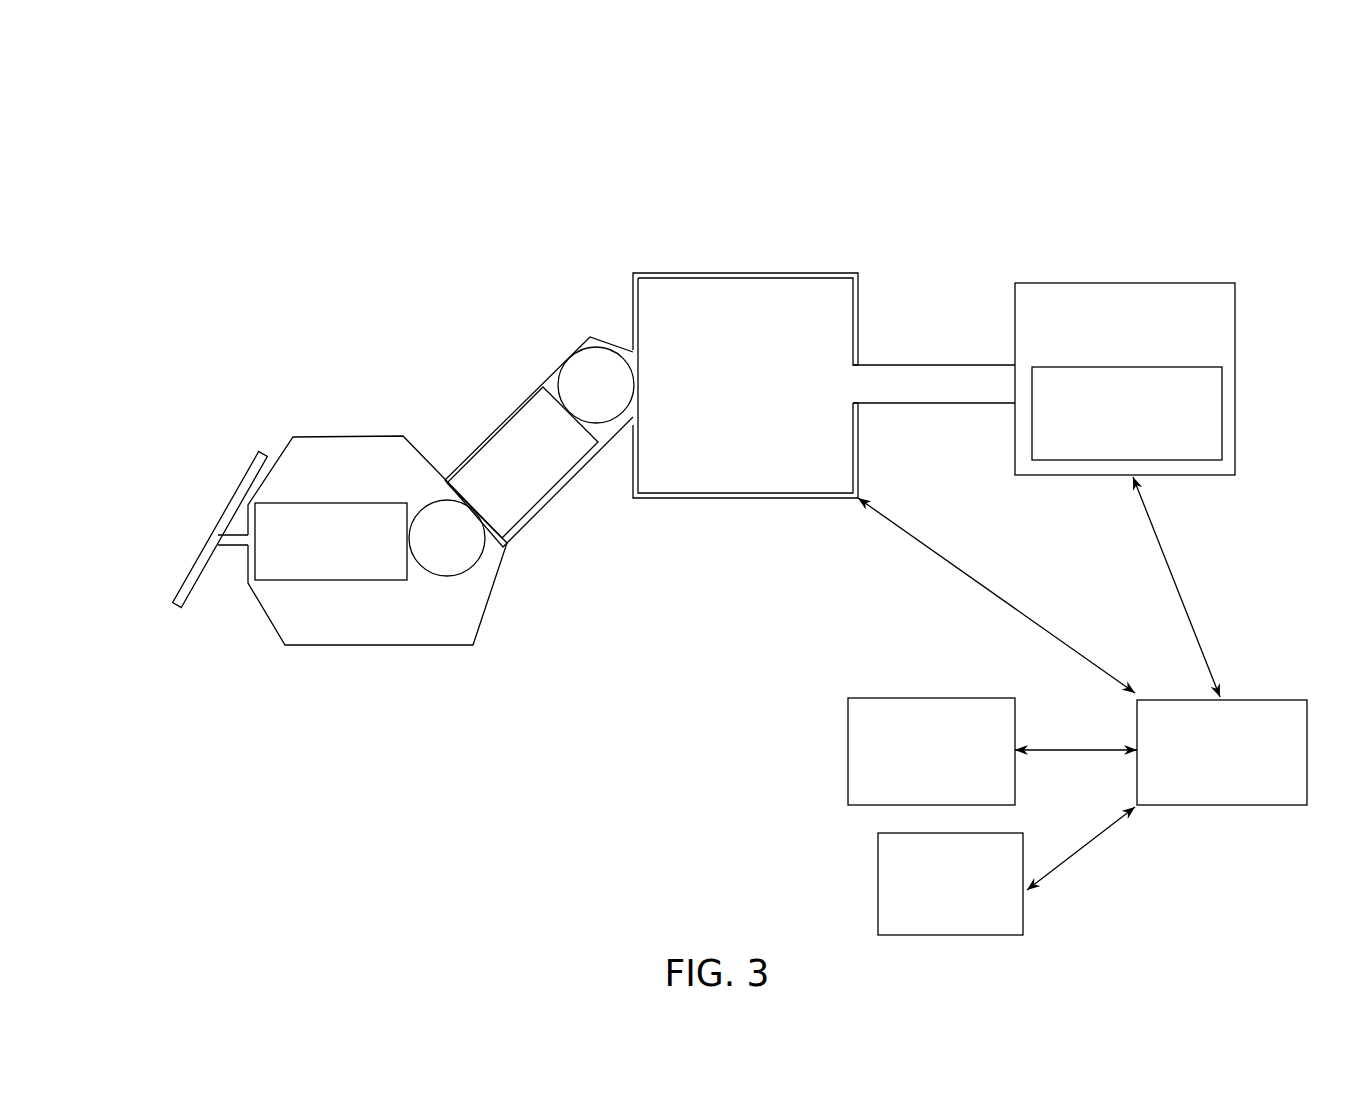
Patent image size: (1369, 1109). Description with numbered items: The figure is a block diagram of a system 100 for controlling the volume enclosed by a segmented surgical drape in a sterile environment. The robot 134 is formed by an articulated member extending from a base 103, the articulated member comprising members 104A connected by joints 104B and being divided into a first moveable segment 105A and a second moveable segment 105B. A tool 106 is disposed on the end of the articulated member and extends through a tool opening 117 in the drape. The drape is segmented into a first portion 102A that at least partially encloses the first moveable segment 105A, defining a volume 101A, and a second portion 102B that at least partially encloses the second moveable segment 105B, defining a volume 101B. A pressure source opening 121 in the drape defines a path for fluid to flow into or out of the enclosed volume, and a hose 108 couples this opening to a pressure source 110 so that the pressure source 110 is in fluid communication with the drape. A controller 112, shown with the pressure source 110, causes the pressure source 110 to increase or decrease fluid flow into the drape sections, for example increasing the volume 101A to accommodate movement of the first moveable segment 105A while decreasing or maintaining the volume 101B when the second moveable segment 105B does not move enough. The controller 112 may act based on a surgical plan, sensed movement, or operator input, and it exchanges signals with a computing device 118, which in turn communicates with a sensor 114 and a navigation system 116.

The system 100 is at (180, 127).
The robot 134 is at (568, 207).
The volume enclosed by the first portion 101A is at (346, 564).
The volume enclosed by the second portion 101B is at (536, 449).
The first portion of the drape 102A is at (393, 646).
The second portion of the drape 102B is at (565, 487).
The base 103 is at (729, 398).
The member 104A is at (345, 528).
The joint 104B is at (440, 527).
The first moveable segment 105A is at (268, 458).
The second moveable segment 105B is at (498, 322).
The tool 106 is at (232, 502).
The hose 108 is at (952, 365).
The pressure source 110 is at (1109, 341).
The controller 112 is at (1109, 438).
The sensor 114 is at (916, 776).
The navigation system 116 is at (934, 919).
The tool opening 117 is at (238, 556).
The computing device 118 is at (1204, 788).
The pressure source opening 121 is at (872, 412).